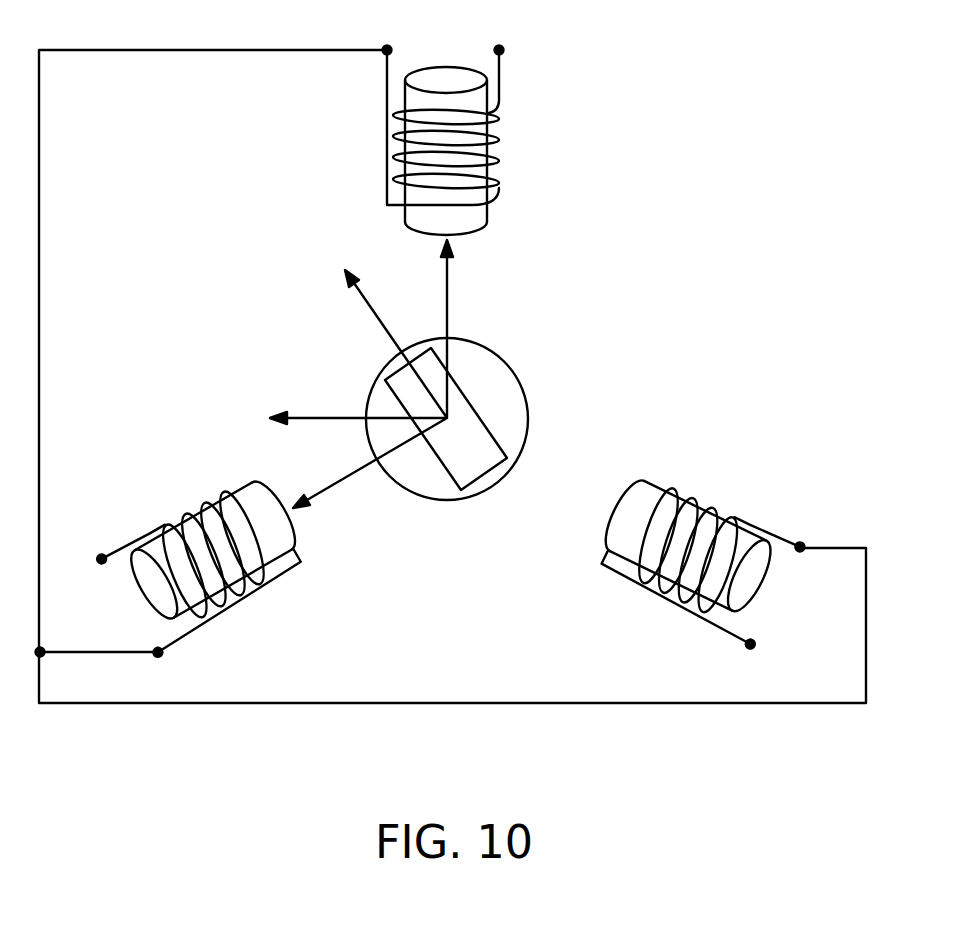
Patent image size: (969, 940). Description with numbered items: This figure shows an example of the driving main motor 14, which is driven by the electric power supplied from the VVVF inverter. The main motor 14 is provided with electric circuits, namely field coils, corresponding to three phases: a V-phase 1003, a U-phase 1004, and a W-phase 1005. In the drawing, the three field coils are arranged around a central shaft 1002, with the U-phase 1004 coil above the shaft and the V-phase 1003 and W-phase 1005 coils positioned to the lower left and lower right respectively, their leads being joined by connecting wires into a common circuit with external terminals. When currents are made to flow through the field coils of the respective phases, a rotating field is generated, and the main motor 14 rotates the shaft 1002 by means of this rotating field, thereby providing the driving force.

The main motor 14 is at (454, 359).
The shaft 1002 is at (473, 430).
The V-phase 1003 is at (195, 520).
The U-phase 1004 is at (488, 166).
The W-phase 1005 is at (707, 505).